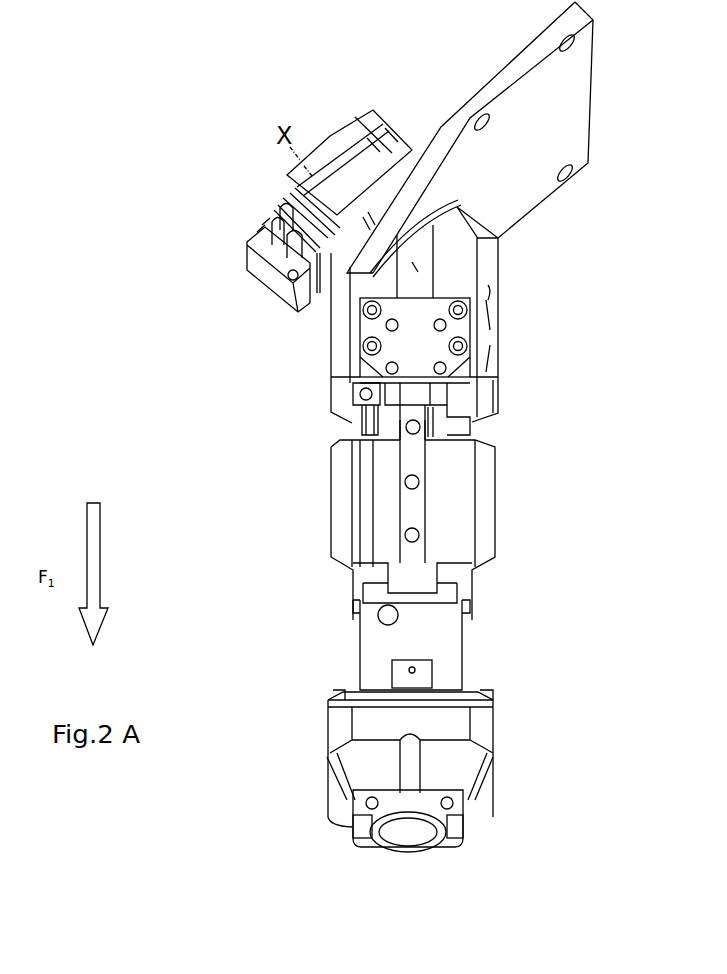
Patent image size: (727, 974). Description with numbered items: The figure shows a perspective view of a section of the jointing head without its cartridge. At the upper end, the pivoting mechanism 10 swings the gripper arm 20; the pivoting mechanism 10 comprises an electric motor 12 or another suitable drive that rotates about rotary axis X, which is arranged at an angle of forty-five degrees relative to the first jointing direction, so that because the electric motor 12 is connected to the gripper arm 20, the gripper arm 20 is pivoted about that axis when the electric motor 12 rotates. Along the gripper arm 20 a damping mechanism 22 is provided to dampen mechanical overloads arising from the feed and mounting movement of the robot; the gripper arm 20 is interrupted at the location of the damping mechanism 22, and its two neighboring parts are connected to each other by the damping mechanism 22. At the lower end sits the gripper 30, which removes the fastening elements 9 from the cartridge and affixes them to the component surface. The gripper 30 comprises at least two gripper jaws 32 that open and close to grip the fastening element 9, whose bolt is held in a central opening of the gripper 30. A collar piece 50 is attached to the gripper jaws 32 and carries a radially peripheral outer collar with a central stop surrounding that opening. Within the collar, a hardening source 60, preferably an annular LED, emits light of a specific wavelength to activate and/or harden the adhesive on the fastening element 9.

The fastening element 9 is at (413, 842).
The pivoting mechanism 10 is at (273, 193).
The electric motor 12 is at (352, 173).
The gripper arm 20 is at (463, 500).
The damping mechanism 22 is at (363, 425).
The gripper 30 is at (485, 758).
The gripper jaws 32 is at (463, 763).
The collar piece 50 is at (357, 833).
The hardening source 60 is at (458, 848).